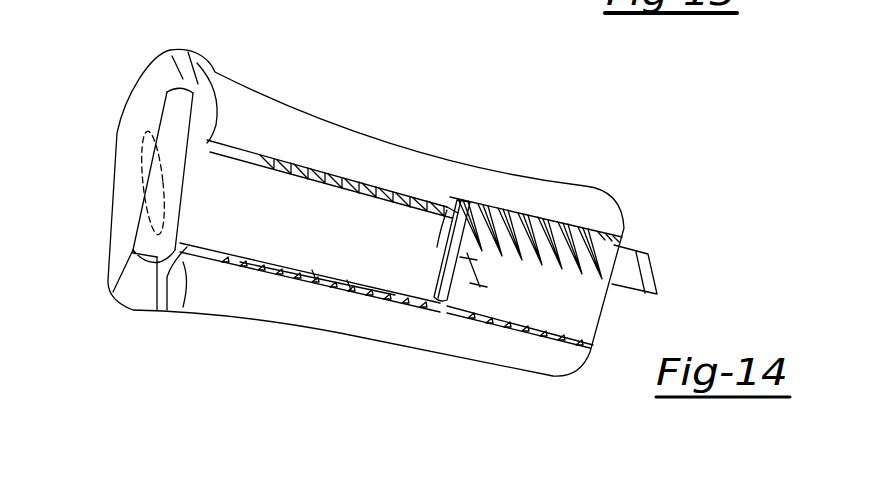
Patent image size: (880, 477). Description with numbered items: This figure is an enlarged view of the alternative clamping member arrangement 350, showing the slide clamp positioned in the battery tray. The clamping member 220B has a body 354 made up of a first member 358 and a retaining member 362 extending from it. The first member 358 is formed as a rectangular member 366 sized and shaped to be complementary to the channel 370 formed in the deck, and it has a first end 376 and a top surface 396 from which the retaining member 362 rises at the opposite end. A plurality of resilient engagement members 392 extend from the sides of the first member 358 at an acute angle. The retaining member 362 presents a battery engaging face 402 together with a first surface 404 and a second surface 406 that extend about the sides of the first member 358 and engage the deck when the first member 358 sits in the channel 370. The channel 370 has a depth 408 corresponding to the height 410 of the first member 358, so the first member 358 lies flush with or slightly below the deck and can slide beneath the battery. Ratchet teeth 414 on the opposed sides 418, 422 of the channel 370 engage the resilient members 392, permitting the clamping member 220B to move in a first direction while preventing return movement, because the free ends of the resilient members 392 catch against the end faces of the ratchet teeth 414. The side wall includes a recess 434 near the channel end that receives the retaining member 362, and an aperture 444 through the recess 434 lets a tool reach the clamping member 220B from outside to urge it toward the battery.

The clamping member arrangement 350 is at (270, 90).
The recess 434 is at (182, 77).
The first surface 404 is at (218, 130).
The retaining member 362 is at (173, 97).
The battery engaging face 402 is at (193, 128).
The aperture 444 is at (140, 173).
The top surface 396 is at (200, 230).
The second surface 406 is at (167, 313).
The first member 358 is at (290, 190).
The resilient engagement members 392 is at (245, 258).
The rectangular member 366 is at (460, 212).
The side of channel 418 is at (523, 210).
The depth 408 is at (642, 276).
The side of channel 422 is at (433, 305).
The first end 376 is at (452, 305).
The clamping member 220B is at (253, 223).
The body 354 is at (328, 242).
The height 410 is at (485, 272).
The ratchet teeth 414 is at (520, 320).
The channel 370 is at (540, 277).